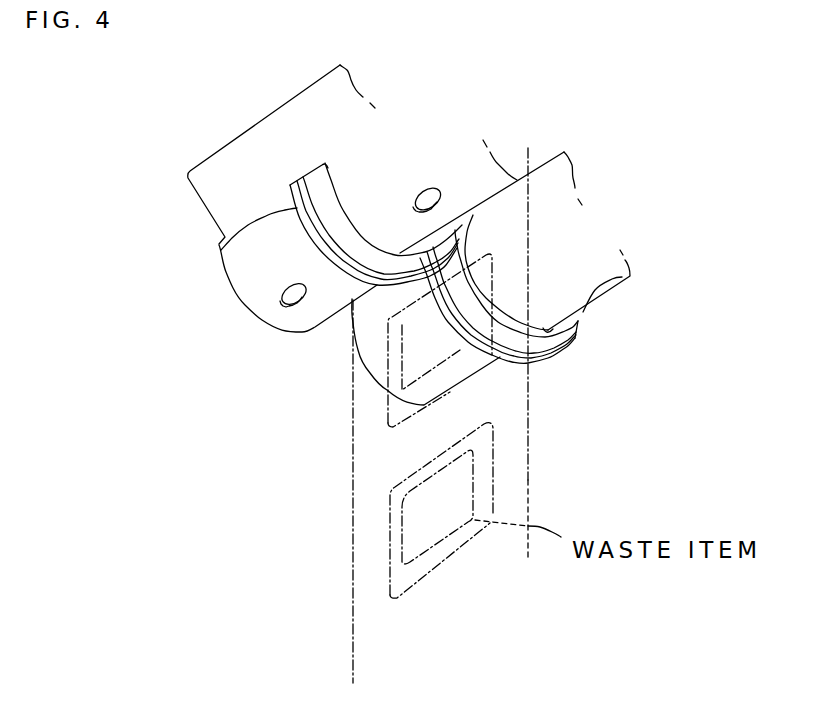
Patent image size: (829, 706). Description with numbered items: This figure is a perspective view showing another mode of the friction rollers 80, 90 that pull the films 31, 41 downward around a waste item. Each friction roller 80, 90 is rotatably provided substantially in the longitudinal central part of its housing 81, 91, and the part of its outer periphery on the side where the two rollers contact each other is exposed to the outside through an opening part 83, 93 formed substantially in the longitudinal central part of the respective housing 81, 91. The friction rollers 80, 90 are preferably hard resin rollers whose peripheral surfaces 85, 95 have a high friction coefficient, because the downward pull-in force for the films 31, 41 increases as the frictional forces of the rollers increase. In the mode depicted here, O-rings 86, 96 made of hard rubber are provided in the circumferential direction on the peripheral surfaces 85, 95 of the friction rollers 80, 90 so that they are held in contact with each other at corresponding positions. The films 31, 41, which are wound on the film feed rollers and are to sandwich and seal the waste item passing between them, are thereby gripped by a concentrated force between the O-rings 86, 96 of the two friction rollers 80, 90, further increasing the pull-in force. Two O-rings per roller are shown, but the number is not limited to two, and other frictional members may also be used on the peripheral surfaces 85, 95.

The friction roller 90 is at (228, 265).
The housing 91 is at (296, 323).
The opening part 93 is at (331, 182).
The peripheral surface 95 is at (342, 253).
The O-rings 96 is at (323, 214).
The housing 81 is at (630, 277).
The friction roller 80 is at (577, 318).
The opening part 83 is at (553, 328).
The O-rings 86 is at (534, 356).
The peripheral surface 85 is at (506, 358).
The film 31 is at (503, 415).
The film 41 is at (528, 481).